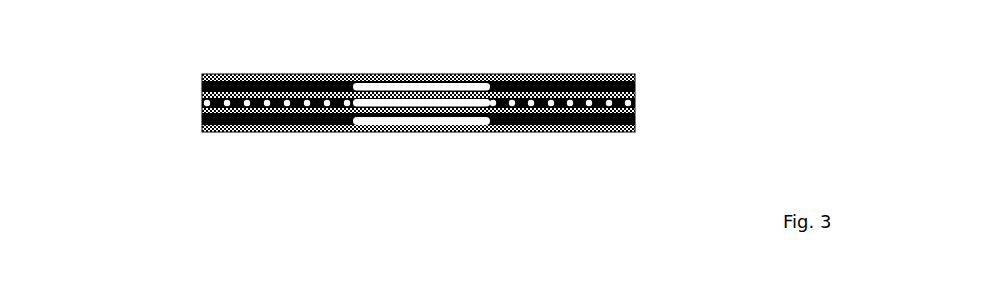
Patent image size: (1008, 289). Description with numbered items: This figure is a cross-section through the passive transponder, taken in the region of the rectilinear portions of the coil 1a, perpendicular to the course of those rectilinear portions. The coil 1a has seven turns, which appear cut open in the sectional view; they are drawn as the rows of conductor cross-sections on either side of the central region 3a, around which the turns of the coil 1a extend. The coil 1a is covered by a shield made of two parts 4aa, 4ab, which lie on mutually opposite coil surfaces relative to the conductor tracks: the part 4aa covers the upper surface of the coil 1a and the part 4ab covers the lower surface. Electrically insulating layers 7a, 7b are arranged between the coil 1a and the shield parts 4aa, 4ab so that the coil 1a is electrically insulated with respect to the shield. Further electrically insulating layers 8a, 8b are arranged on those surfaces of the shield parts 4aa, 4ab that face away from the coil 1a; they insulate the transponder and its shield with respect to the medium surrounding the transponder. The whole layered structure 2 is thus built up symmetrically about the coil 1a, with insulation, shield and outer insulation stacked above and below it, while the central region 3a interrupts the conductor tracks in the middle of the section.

The coil 1a is at (202, 100).
The layered sensor element 2 is at (203, 133).
The central region 3a is at (417, 98).
The part of the shield 4aa is at (215, 78).
The part of the shield 4ab is at (202, 122).
The electrically insulating layer 7a is at (637, 87).
The electrically insulating layer 7b is at (635, 115).
The electrically insulating layer 8a is at (635, 73).
The electrically insulating layer 8b is at (600, 132).